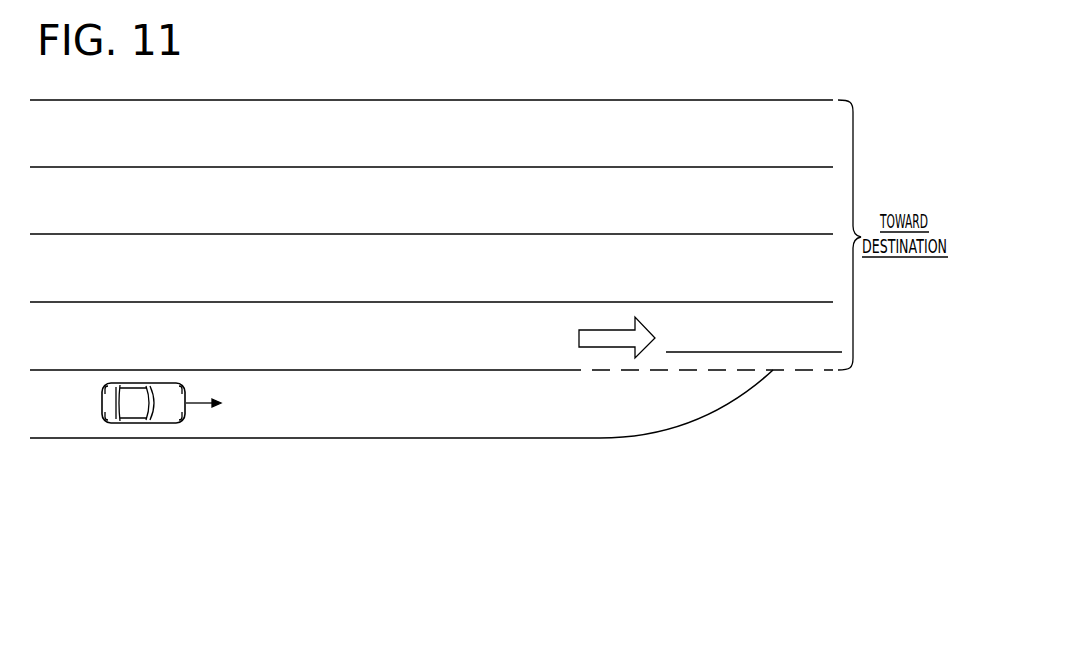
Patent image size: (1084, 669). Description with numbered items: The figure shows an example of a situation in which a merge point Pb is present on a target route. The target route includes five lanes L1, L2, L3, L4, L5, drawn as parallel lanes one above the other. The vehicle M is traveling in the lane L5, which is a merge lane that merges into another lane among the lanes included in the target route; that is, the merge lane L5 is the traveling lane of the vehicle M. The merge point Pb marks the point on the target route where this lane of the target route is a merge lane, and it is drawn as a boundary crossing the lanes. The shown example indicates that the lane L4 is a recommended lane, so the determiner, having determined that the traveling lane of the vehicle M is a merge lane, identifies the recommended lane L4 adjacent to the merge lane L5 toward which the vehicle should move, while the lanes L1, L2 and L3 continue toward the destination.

The lane L1 is at (67, 149).
The lane L2 is at (67, 216).
The lane L3 is at (67, 283).
The recommended lane L4 is at (67, 352).
The merge lane L5 is at (67, 419).
The vehicle M is at (141, 425).
The merge point Pb is at (563, 73).